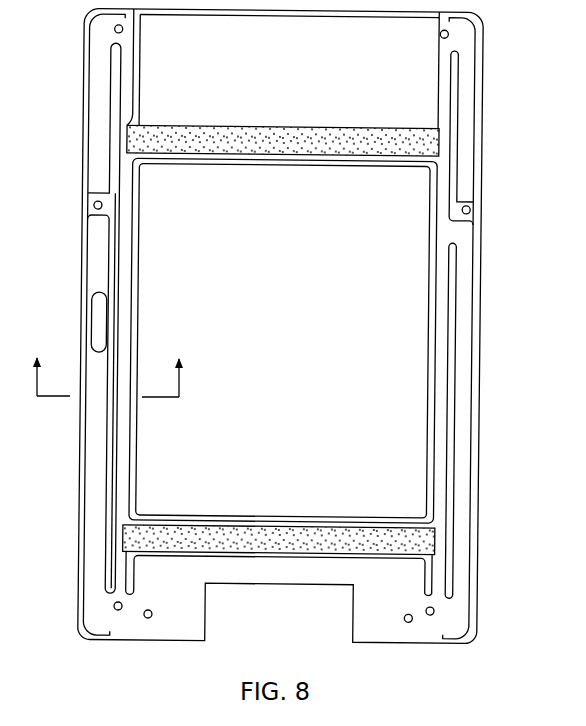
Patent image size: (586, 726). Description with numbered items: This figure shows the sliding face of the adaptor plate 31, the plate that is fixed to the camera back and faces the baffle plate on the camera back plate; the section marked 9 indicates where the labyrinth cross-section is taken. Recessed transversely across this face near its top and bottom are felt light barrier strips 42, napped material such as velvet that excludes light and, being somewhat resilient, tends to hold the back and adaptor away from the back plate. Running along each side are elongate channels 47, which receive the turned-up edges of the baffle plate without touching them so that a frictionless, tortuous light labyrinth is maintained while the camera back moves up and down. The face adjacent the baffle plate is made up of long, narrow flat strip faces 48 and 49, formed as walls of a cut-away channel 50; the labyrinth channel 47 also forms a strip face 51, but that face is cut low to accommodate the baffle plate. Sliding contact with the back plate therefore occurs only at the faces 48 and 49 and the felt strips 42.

The adaptor plate 31 is at (81, 77).
The felt light barrier strips 42 is at (420, 142).
The elongate channels 47 is at (118, 420).
The flat strip face 48 is at (79, 485).
The flat strip face 49 is at (107, 537).
The cut-away channel 50 is at (97, 246).
The strip face 51 is at (440, 372).
The section line 9- 9 is at (108, 359).